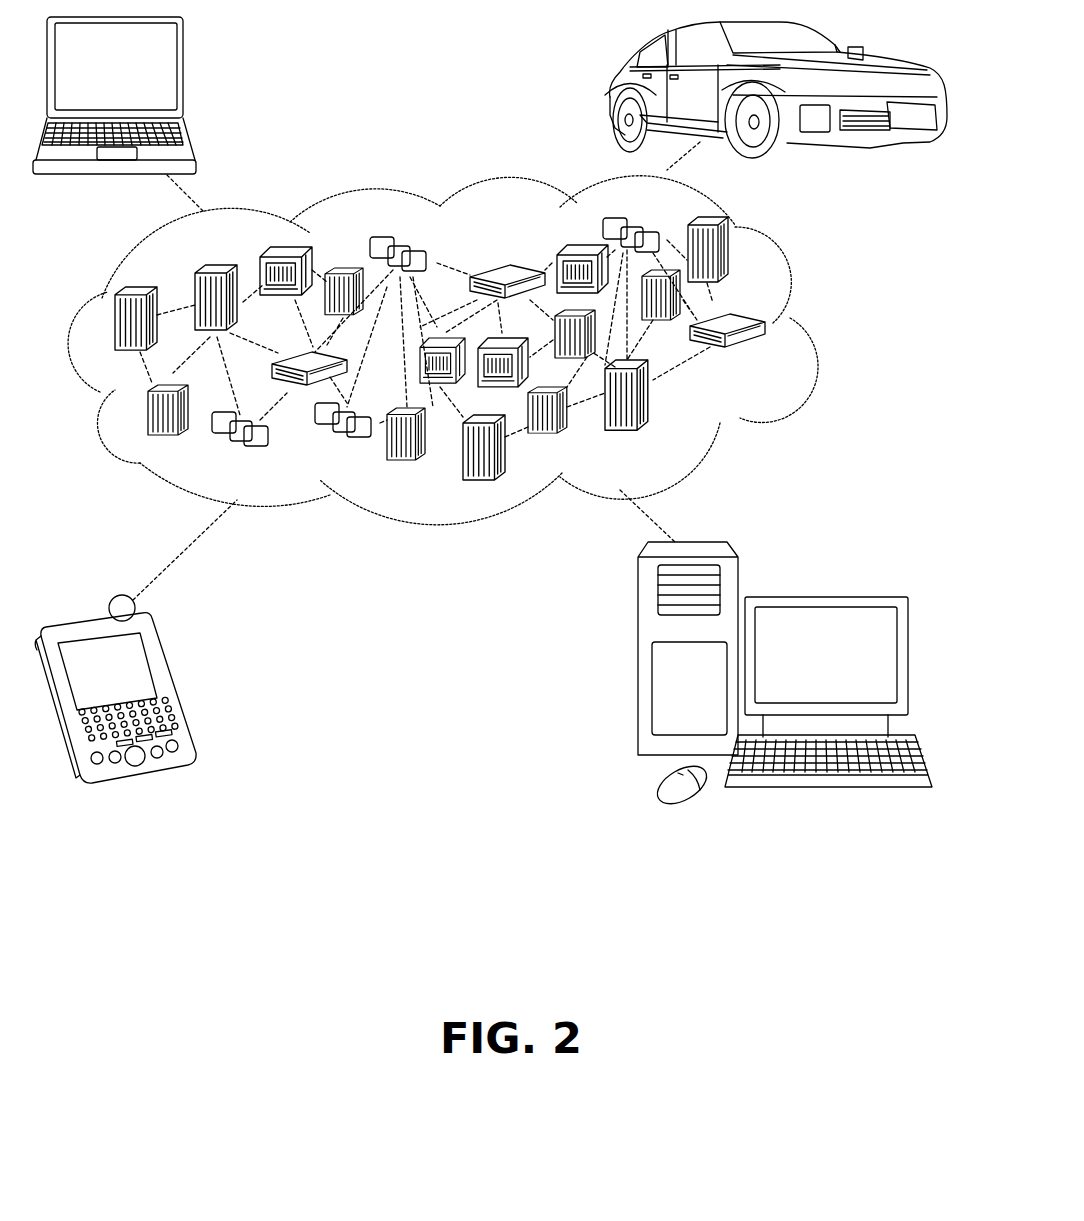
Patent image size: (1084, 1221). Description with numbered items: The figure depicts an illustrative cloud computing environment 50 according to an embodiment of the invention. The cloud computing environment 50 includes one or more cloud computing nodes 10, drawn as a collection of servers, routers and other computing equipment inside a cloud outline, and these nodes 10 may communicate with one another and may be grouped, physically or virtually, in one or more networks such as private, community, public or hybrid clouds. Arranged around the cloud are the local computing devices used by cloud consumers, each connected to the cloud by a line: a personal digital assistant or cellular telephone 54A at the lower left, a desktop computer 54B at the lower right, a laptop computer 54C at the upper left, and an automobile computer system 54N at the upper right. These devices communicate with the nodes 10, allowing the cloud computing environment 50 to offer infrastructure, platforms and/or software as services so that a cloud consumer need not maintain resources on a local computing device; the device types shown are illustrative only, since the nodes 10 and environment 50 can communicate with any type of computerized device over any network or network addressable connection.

The cloud computing node 10 is at (775, 359).
The cloud computing environment 50 is at (822, 326).
The personal digital assistant or cellular telephone 54A is at (172, 681).
The desktop computer 54B is at (823, 597).
The laptop computer 54C is at (183, 76).
The automobile computer system 54N is at (608, 93).